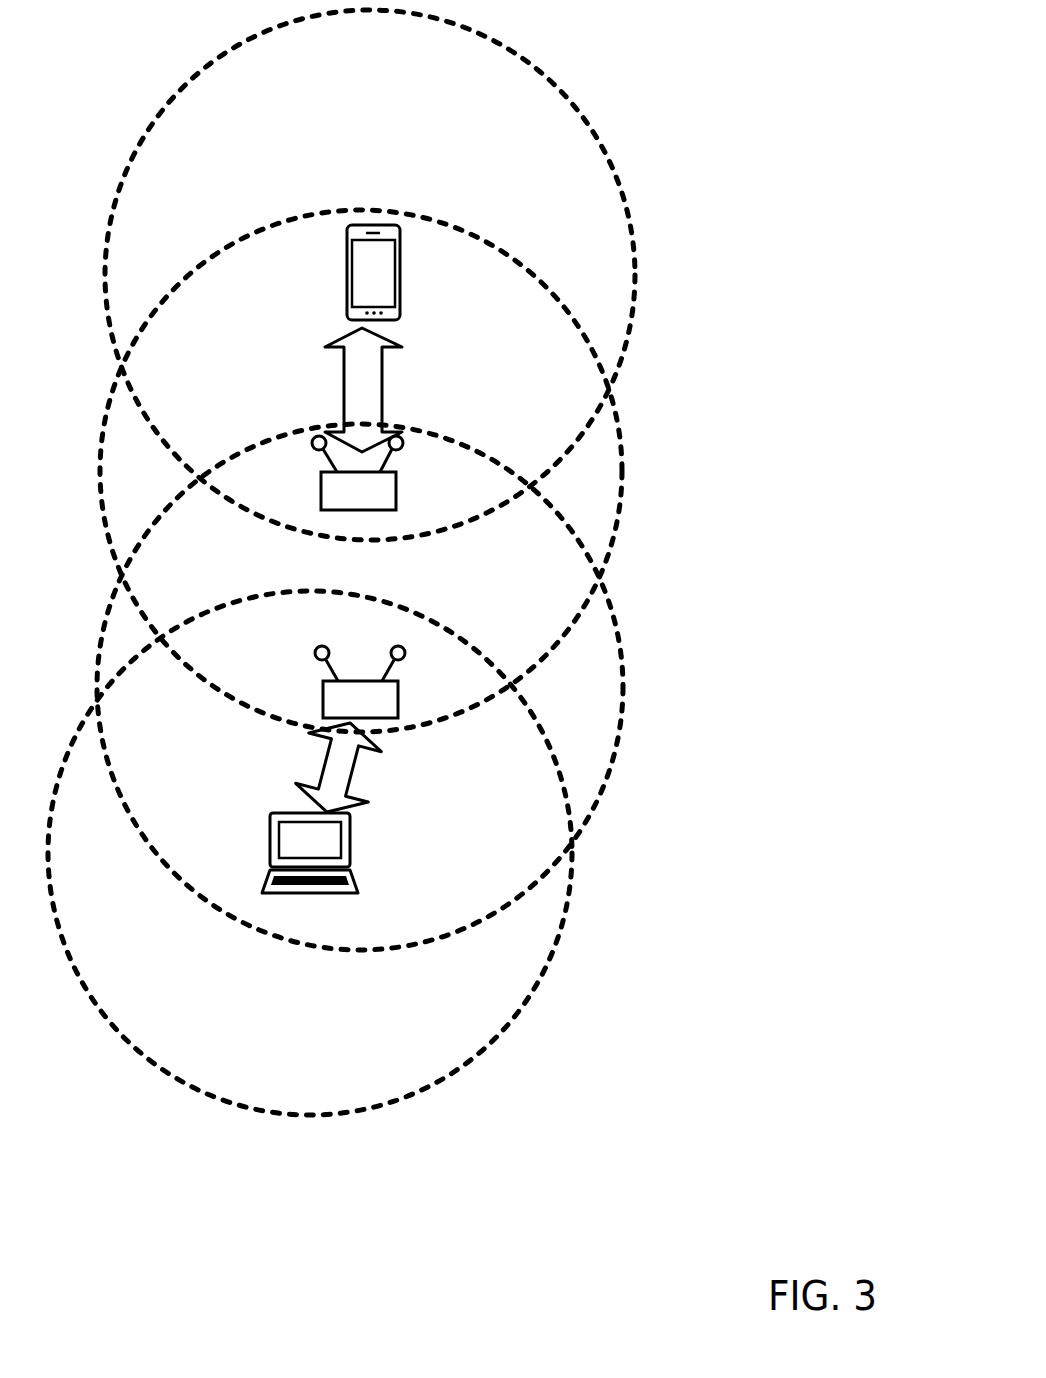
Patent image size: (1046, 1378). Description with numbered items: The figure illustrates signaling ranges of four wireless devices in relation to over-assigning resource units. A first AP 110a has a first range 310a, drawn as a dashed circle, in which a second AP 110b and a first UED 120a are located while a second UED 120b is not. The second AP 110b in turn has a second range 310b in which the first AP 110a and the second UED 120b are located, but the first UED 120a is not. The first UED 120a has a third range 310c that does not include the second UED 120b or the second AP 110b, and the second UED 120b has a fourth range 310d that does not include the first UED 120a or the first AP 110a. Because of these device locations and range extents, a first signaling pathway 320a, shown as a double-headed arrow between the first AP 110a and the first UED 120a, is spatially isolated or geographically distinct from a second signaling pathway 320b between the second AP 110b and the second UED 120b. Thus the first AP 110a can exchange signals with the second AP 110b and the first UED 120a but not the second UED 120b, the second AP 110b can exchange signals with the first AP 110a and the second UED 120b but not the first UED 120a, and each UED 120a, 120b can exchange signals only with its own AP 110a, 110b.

The first range 310a is at (622, 465).
The second range 310b is at (623, 680).
The third range 310c is at (627, 212).
The fourth range 310d is at (553, 955).
The first AP 110a is at (396, 500).
The second AP 110b is at (350, 835).
The first UED 120a is at (347, 300).
The second UED 120b is at (323, 708).
The first signaling pathway 320a is at (344, 385).
The second signaling pathway 320b is at (323, 760).